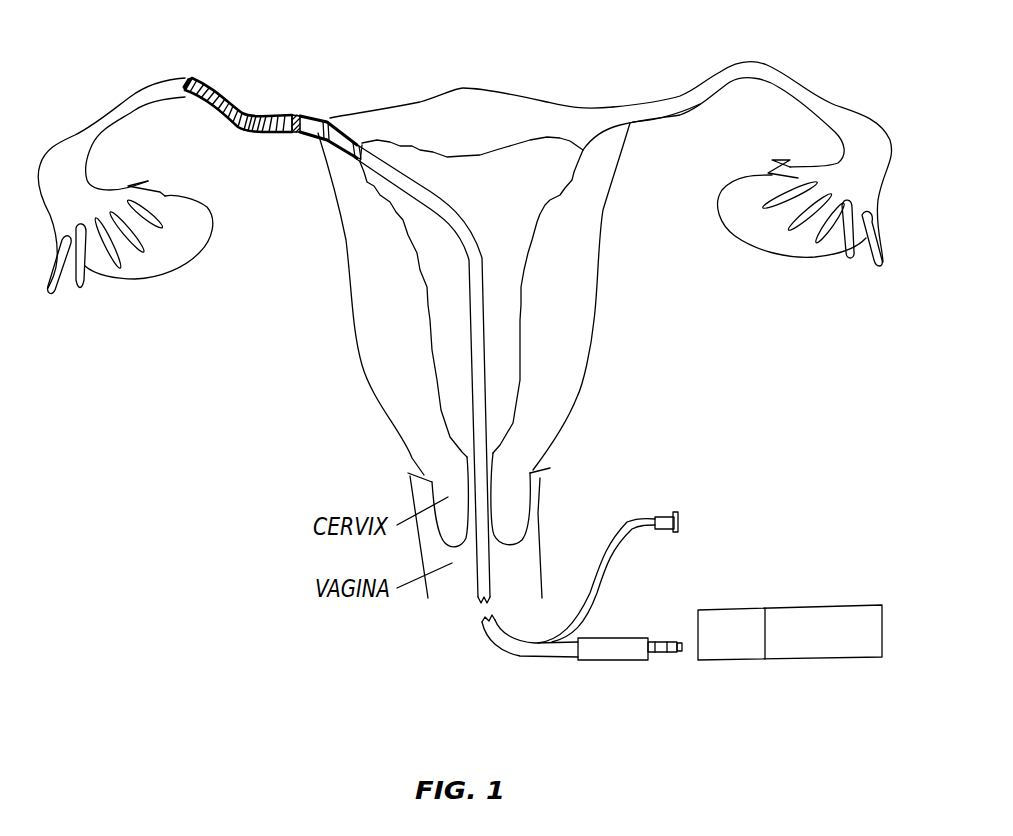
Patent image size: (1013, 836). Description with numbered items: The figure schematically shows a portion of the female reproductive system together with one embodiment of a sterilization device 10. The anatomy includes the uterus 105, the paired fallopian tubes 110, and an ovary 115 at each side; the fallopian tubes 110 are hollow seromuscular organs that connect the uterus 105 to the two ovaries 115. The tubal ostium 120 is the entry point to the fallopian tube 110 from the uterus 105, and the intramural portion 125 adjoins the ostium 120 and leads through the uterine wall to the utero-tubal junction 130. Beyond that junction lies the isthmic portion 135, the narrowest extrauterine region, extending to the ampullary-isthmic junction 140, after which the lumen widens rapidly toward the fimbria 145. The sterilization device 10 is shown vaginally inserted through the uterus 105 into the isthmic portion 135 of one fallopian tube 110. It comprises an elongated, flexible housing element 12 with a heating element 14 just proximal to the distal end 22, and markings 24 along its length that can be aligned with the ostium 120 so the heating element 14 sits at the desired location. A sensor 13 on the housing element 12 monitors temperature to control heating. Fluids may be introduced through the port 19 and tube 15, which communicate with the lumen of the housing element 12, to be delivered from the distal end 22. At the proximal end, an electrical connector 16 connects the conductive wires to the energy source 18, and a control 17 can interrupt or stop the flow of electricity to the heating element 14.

The sterilization device 10 is at (350, 344).
The housing element 12 is at (482, 312).
The sensor 13 is at (290, 133).
The heating element 14 is at (223, 124).
The tube 15 is at (625, 513).
The electrical connector 16 is at (608, 660).
The control 17 is at (727, 660).
The energy source 18 is at (790, 639).
The port 19 is at (680, 513).
The distal end 22 is at (185, 78).
The markings 24 is at (356, 150).
The uterus 105 is at (450, 347).
The fallopian tubes 110 is at (110, 121).
The ovary 115 is at (787, 248).
The tubal ostium 120 is at (583, 153).
The intramural portion 125 is at (582, 117).
The utero-tubal junction 130 is at (613, 105).
The isthmic portion 135 is at (695, 113).
The ampullary-isthmic junction 140 is at (743, 58).
The fimbria 145 is at (825, 227).